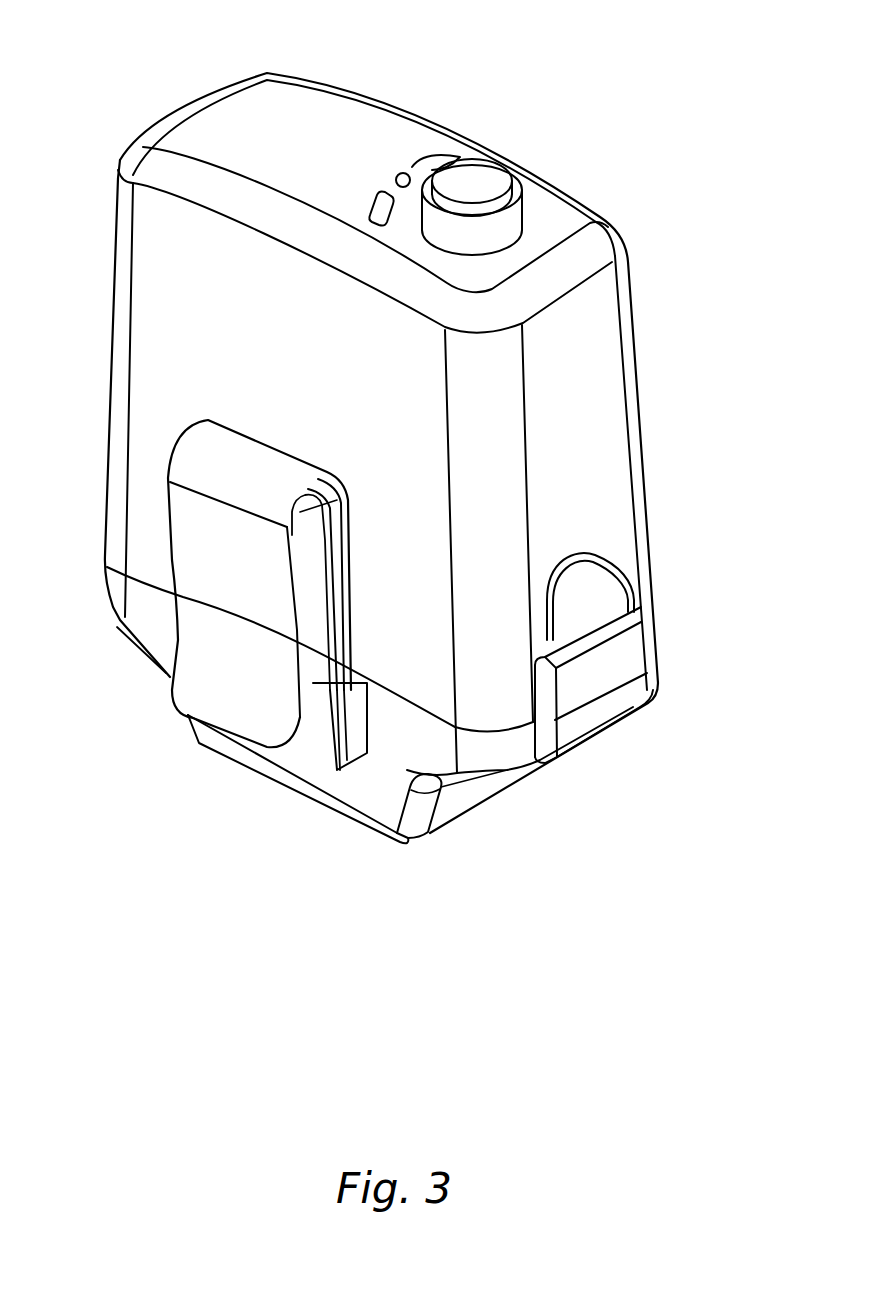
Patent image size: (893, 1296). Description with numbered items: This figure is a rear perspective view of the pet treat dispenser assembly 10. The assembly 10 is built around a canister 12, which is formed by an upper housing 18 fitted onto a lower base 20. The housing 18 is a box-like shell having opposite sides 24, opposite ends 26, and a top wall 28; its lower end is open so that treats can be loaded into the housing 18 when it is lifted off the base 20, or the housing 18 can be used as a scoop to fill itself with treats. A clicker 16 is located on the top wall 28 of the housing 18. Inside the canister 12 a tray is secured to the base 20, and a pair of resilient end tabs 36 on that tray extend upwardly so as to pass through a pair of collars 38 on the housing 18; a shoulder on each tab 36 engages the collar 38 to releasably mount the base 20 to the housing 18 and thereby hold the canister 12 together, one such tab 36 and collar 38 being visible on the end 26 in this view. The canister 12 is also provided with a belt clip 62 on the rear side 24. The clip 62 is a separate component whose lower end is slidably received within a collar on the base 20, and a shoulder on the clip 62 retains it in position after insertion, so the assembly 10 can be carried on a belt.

The pet treat dispenser assembly 10 is at (475, 45).
The canister 12 is at (607, 518).
The clicker 16 is at (487, 179).
The upper housing 18 is at (148, 318).
The lower base 20 is at (457, 803).
The opposite sides 24 is at (266, 369).
The opposite ends 26 is at (595, 432).
The top wall 28 is at (318, 157).
The resilient end tabs 36 is at (600, 600).
The collars 38 is at (613, 653).
The belt clip 62 is at (197, 690).